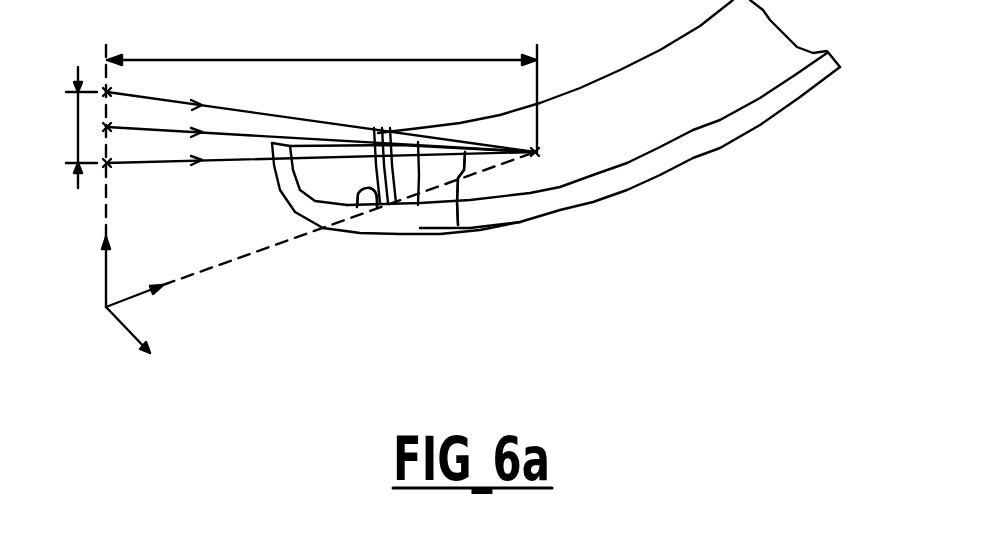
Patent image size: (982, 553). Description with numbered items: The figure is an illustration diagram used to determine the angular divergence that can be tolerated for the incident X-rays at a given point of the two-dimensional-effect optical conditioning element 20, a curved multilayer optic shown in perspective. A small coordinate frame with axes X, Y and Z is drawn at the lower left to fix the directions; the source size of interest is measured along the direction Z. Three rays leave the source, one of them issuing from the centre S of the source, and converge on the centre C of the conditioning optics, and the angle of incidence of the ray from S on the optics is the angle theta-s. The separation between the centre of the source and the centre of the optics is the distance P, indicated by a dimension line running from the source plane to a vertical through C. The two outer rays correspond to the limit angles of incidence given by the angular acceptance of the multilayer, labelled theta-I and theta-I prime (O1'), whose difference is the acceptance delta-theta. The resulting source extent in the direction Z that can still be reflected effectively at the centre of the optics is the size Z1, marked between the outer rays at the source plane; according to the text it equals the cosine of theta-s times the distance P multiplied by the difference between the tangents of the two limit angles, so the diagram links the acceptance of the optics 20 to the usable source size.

The optical conditioning element 20 is at (645, 190).
The limit angle of incidence θI' O1' is at (494, 226).
The centre of the source S is at (107, 125).
The centre of the conditioning optics C is at (550, 134).
The distance p between source centre and optics centre P is at (322, 82).
The source size Z_I in direction Z Z1 is at (65, 127).
The direction Z is at (87, 176).
The direction Y is at (320, 229).
The direction X is at (145, 345).